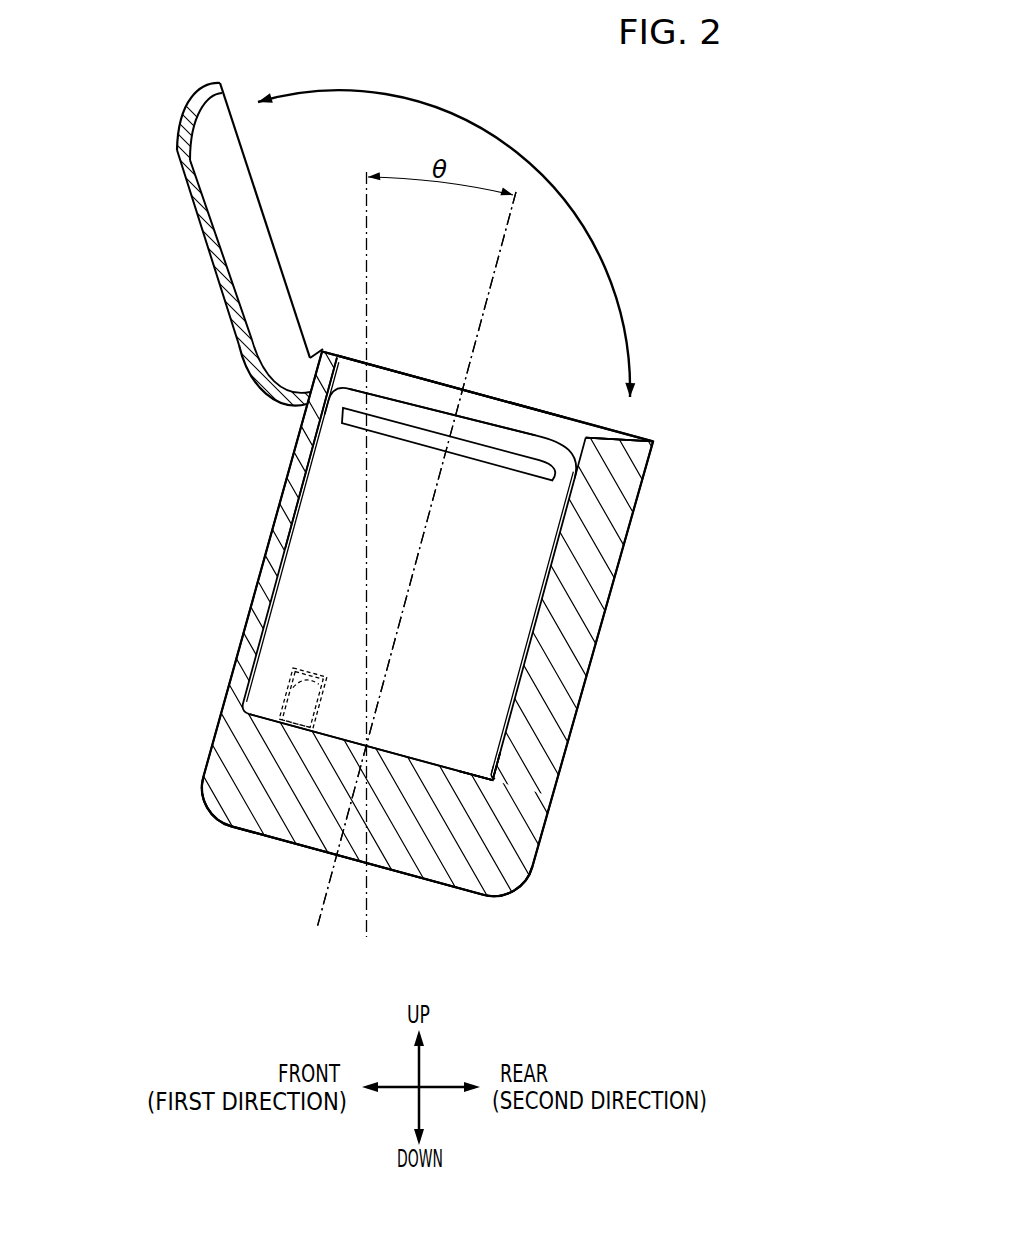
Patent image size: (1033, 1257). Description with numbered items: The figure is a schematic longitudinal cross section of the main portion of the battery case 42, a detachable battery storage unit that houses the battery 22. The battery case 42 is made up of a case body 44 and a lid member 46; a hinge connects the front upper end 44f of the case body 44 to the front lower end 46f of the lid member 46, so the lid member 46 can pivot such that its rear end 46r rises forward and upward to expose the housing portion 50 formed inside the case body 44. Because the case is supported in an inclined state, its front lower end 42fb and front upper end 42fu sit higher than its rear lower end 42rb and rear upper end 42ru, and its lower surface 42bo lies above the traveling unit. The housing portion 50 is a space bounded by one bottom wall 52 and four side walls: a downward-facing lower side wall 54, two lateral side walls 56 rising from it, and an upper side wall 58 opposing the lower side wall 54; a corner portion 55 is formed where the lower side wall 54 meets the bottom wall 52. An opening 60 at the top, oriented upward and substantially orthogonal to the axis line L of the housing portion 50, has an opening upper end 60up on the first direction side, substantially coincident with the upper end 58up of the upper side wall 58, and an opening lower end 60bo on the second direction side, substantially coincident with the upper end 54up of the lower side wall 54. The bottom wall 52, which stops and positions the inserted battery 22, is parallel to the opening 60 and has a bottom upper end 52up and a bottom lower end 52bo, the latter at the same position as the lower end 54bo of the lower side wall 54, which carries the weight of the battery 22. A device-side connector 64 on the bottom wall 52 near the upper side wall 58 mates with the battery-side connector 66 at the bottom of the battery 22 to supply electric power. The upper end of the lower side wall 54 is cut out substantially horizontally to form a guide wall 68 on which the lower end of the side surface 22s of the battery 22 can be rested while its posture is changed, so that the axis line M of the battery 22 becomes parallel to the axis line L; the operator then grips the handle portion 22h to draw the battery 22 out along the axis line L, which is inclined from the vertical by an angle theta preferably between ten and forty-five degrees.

The battery 22 is at (408, 388).
The handle portion 22h is at (525, 428).
The side surface 22s is at (532, 635).
The battery case 42 is at (190, 376).
The rear upper end 42ru is at (185, 100).
The front upper end 42fu is at (249, 328).
The front lower end 42fb is at (222, 813).
The rear lower end 42rb is at (517, 887).
The lower surface 42bo is at (405, 873).
The case body 44 is at (300, 453).
The front upper end 44f is at (338, 352).
The lid member 46 is at (247, 330).
The rear end 46r is at (212, 82).
The front lower end 46f is at (292, 408).
The housing portion 50 is at (298, 527).
The bottom wall 52 is at (423, 760).
The bottom upper end 52up is at (240, 713).
The bottom lower end 52bo is at (495, 782).
The lower side wall 54 is at (565, 582).
The upper end 54up is at (650, 437).
The lower end 54bo is at (479, 761).
The corner portion 55 is at (490, 777).
The lateral side wall 56 is at (428, 387).
The upper side wall 58 is at (275, 553).
The upper end 58up is at (332, 352).
The opening 60 is at (510, 397).
The opening upper end 60up is at (442, 412).
The opening lower end 60bo is at (619, 439).
The device-side connector 64 is at (313, 683).
The battery-side connector 66 is at (310, 672).
The guide wall 68 is at (605, 437).
The axis line L is at (517, 252).
The axis line M is at (416, 560).